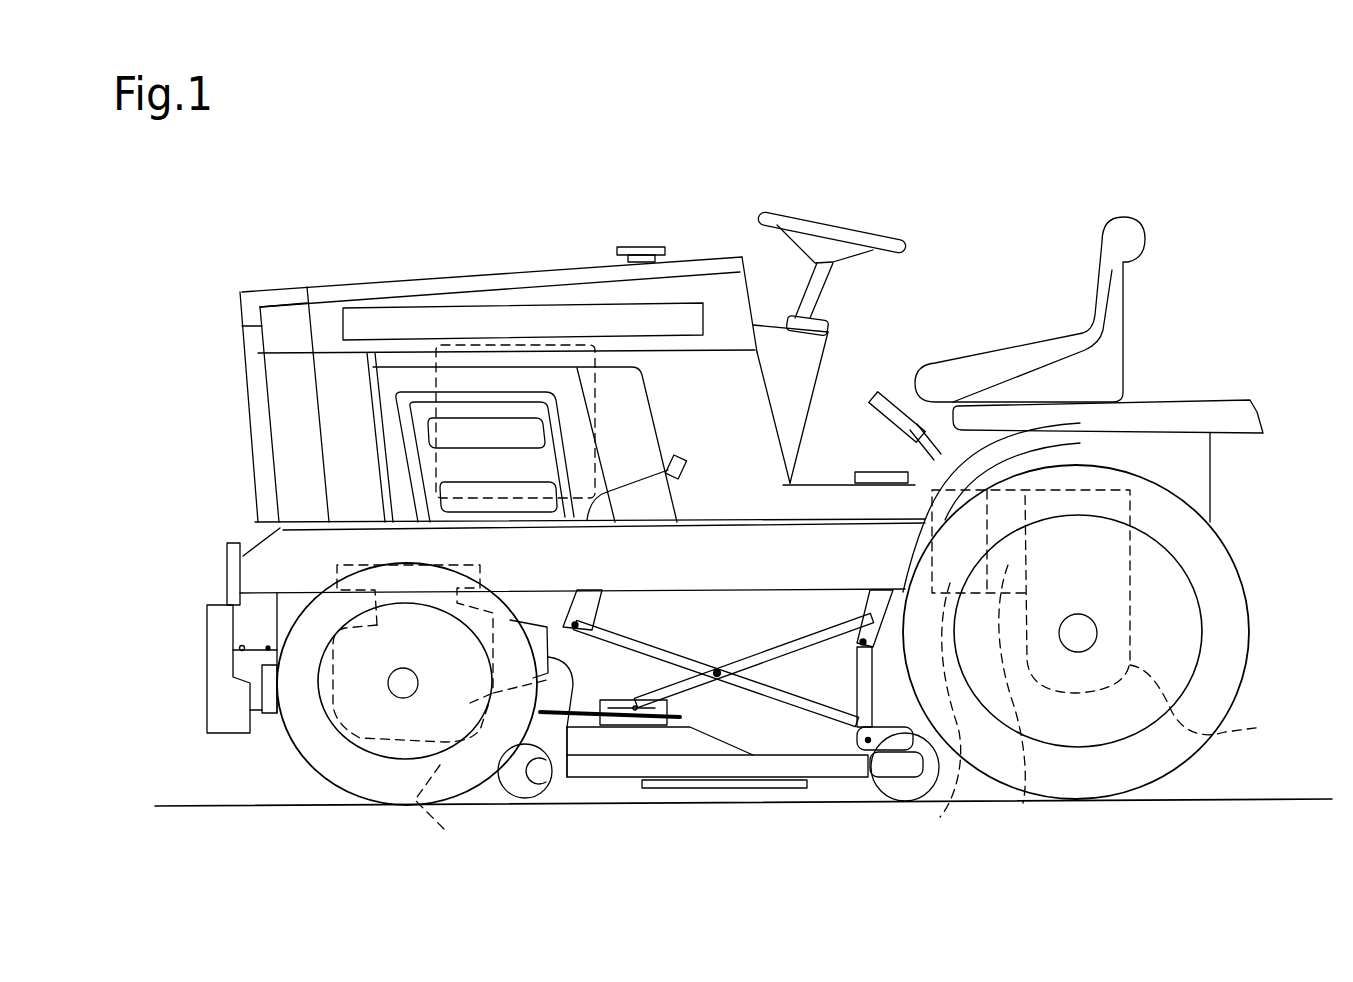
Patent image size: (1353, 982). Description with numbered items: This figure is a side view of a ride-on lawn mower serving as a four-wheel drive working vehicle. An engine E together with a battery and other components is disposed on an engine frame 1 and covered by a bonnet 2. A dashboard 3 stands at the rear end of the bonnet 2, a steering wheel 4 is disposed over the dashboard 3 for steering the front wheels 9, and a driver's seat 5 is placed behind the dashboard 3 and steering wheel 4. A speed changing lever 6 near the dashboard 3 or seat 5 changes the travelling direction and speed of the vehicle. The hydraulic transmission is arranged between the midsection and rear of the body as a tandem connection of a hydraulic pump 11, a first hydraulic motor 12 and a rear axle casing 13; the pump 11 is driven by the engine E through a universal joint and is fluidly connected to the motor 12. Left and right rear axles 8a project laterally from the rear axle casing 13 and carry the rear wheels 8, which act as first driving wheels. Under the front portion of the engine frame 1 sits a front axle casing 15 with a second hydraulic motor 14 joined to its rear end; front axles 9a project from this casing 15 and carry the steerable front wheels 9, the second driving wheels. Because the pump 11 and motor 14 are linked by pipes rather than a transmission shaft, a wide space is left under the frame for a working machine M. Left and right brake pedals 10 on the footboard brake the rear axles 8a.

The engine frame 1 is at (278, 565).
The bonnet 2 is at (412, 278).
The dashboard 3 is at (813, 355).
The steering wheel 4 is at (903, 243).
The driver's seat 5 is at (1097, 300).
The speed changing lever 6 is at (877, 400).
The rear wheels 8 is at (1212, 583).
The rear axles 8a is at (1080, 625).
The front wheels 9 is at (335, 752).
The front axles 9a is at (410, 675).
The brake pedals 10 is at (688, 465).
The hydraulic pump 11 is at (937, 736).
The first hydraulic motor 12 is at (1018, 713).
The rear axle casing 13 is at (1214, 707).
The second hydraulic motor 14 is at (567, 740).
The front axle casing 15 is at (445, 820).
The engine E is at (437, 382).
The working machine M is at (735, 790).